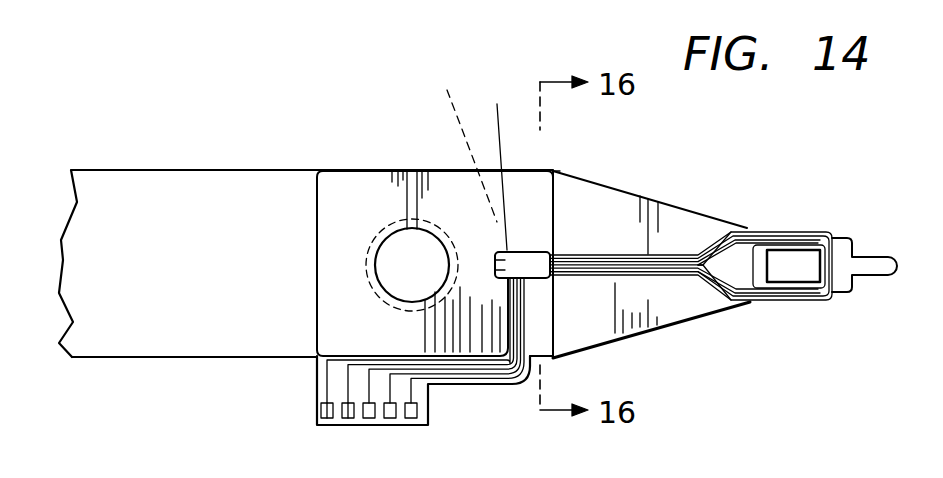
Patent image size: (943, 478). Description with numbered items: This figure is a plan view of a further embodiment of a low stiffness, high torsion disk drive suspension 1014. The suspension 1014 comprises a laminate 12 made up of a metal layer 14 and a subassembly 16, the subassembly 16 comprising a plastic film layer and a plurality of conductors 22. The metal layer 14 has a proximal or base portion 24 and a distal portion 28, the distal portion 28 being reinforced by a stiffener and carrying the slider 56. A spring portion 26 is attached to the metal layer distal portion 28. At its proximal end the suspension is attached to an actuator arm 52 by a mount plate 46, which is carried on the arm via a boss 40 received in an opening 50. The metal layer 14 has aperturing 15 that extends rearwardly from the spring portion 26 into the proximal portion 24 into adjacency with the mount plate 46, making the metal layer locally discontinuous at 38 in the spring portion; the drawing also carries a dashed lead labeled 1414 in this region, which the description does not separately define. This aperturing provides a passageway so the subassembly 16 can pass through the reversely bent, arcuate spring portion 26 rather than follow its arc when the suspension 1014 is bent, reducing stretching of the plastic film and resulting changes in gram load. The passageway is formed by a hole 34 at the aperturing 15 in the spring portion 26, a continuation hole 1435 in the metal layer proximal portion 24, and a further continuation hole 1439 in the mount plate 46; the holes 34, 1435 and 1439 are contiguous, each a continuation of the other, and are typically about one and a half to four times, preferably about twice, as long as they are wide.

The laminate 12 is at (620, 226).
The metal layer 14 is at (602, 316).
The aperturing 15 is at (527, 252).
The subassembly 16 is at (667, 255).
The conductors 22 is at (663, 270).
The proximal portion 24 is at (336, 368).
The spring portion 26 is at (525, 172).
The distal portion 28 is at (722, 312).
The hole 34 is at (493, 265).
The locally discontinuous region 38 is at (501, 164).
The boss 40 is at (366, 258).
The mount plate 46 is at (332, 226).
The opening 50 is at (402, 248).
The actuator arm 52 is at (141, 181).
The slider 56 is at (800, 260).
The suspension 1014 is at (65, 203).
The trace path 1414 is at (460, 141).
The continuation hole 1435 is at (519, 386).
The continuation hole 1439 is at (490, 276).